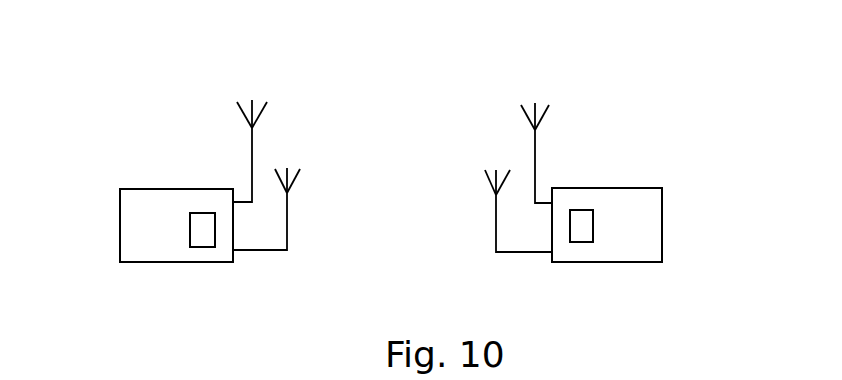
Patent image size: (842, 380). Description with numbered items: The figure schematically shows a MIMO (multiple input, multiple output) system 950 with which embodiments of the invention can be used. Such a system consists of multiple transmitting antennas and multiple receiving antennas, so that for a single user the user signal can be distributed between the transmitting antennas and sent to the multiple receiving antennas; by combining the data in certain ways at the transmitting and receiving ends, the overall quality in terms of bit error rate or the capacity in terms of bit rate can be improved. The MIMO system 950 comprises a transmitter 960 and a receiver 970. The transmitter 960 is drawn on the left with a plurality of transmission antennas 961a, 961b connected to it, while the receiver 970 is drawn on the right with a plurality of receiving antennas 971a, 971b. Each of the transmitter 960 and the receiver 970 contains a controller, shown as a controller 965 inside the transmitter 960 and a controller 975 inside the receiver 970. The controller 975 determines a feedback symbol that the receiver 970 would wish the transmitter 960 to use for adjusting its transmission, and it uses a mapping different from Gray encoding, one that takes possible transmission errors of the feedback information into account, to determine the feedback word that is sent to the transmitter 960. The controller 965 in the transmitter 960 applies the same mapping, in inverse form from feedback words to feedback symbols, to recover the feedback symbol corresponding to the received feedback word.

The MIMO system 950 is at (660, 74).
The transmitter 960 is at (120, 214).
The controller 965 is at (190, 222).
The transmission antenna 961a is at (252, 140).
The transmission antenna 961b is at (287, 224).
The receiver 970 is at (662, 213).
The controller 975 is at (593, 228).
The receiving antenna 971a is at (535, 145).
The receiving antenna 971b is at (496, 221).